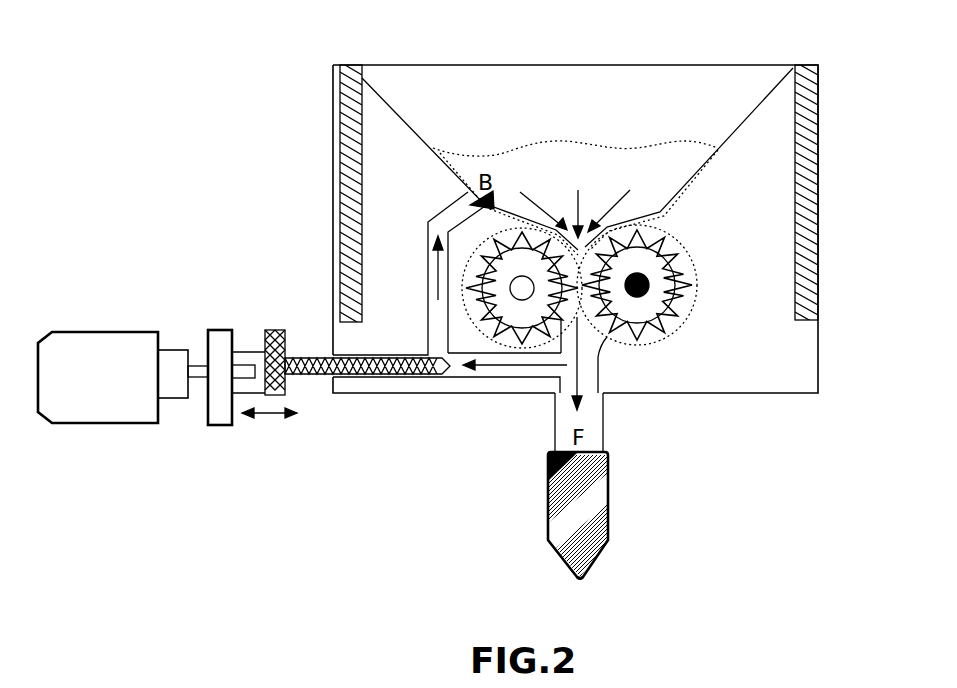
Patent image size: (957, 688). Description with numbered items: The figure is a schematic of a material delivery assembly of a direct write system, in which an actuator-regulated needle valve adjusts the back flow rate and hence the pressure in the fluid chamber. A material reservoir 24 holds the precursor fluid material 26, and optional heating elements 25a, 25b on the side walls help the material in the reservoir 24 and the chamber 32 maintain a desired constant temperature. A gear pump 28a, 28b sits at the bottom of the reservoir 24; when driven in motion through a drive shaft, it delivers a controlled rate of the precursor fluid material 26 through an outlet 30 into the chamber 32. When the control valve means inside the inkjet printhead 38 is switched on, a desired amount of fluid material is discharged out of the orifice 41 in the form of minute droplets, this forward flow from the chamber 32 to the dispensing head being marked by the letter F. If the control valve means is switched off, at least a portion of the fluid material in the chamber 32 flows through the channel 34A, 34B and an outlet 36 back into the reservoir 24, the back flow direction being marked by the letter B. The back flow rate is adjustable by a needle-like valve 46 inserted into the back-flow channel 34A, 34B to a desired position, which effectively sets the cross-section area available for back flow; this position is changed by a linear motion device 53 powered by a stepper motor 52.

The material reservoir 24 is at (440, 80).
The heating element 25a is at (818, 210).
The heating element 25b is at (340, 150).
The precursor fluid material 26 is at (662, 160).
The gear pump 28a is at (667, 300).
The gear pump 28b is at (522, 288).
The outlet 30 is at (583, 320).
The chamber 32 is at (592, 417).
The back-flow channel 34A is at (525, 372).
The back-flow channel 34B is at (410, 273).
The outlet 36 is at (476, 203).
The inkjet printhead 38 is at (595, 498).
The orifice 41 is at (583, 580).
The needle-like valve 46 is at (365, 376).
The stepper motor 52 is at (120, 335).
The linear motion device 53 is at (217, 412).